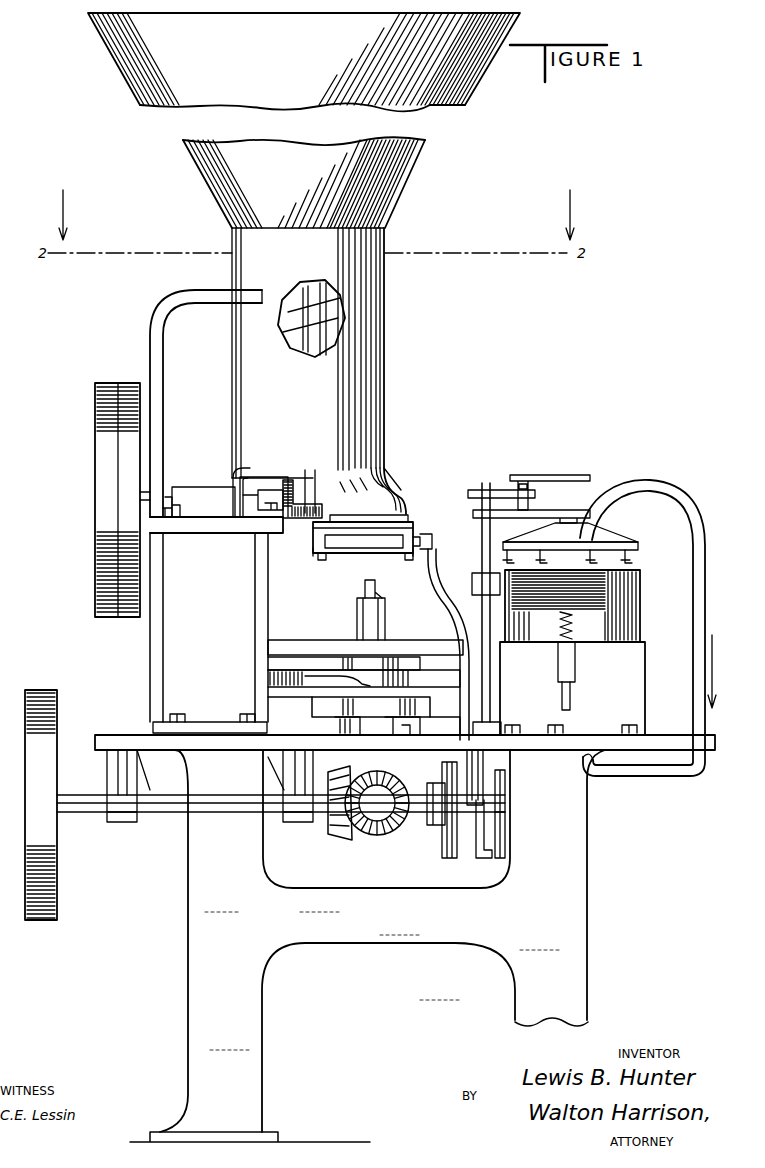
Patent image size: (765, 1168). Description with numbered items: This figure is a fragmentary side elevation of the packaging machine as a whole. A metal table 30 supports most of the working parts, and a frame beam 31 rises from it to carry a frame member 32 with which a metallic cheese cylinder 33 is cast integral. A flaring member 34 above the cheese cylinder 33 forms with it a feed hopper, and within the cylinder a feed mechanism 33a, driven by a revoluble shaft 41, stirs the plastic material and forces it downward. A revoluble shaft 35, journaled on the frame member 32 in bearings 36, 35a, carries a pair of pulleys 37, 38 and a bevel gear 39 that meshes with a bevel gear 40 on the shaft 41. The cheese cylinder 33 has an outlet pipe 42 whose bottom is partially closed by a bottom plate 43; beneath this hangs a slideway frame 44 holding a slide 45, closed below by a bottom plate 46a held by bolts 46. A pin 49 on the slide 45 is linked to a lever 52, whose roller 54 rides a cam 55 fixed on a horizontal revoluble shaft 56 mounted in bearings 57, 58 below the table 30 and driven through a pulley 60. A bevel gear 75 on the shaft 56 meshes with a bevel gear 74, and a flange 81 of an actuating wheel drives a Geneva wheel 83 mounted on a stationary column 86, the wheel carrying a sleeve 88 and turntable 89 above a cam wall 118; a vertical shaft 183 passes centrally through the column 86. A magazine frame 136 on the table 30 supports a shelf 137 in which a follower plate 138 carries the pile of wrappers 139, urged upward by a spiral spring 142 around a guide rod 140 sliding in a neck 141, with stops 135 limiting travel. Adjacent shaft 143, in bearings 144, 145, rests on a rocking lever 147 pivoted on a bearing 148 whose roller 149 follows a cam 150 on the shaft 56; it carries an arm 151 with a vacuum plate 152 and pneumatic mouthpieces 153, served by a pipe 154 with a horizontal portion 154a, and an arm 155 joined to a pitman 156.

The table 30 is at (715, 743).
The frame beam 31 is at (160, 660).
The frame member 32 is at (182, 306).
The cheese cylinder 33 is at (375, 345).
The feed mechanism 33a is at (330, 310).
The flaring member 34 is at (118, 60).
The revoluble shaft 35 is at (170, 494).
The bearing 35a is at (192, 494).
The bearing 36 is at (255, 475).
The pulley 37 is at (128, 388).
The pulley 38 is at (103, 386).
The bevel gear 39 is at (288, 478).
The bevel gear 40 is at (300, 520).
The revoluble shaft 41 is at (310, 470).
The outlet pipe 42 is at (398, 496).
The bottom plate 43 is at (400, 512).
The slideway frame 44 is at (313, 540).
The slide 45 is at (380, 548).
The bolt 46 is at (404, 578).
The bottom plate 46a is at (330, 578).
The pin 49 is at (432, 542).
The lever 52 is at (445, 572).
The roller 54 is at (445, 815).
The cam 55 is at (450, 858).
The revoluble shaft 56 is at (415, 797).
The bearing 57 is at (120, 822).
The bearing 58 is at (298, 822).
The pulley 60 is at (52, 690).
The bevel gear 74 is at (390, 832).
The bevel gear 75 is at (340, 840).
The flange 81 is at (405, 735).
The Geneva wheel 83 is at (312, 705).
The stationary column 86 is at (385, 615).
The sleeve 88 is at (408, 664).
The turntable 89 is at (298, 640).
The cam wall 118 is at (314, 660).
The stop 135 is at (600, 580).
The magazine frame 136 is at (672, 600).
The shelf 137 is at (590, 642).
The follower plate 138 is at (528, 614).
The wrappers 139 is at (600, 568).
The guide rod 140 is at (570, 695).
The neck 141 is at (575, 670).
The spiral spring 142 is at (572, 625).
The shaft 143 is at (482, 608).
The bearing 144 is at (472, 581).
The bearing 145 is at (500, 713).
The rocking lever 147 is at (484, 856).
The bearing 148 is at (483, 762).
The roller 149 is at (505, 845).
The cam 150 is at (505, 818).
The arm 151 is at (560, 510).
The vacuum plate 152 is at (600, 535).
The pneumatic mouthpieces 153 is at (575, 557).
The pipe 154 is at (706, 503).
The pipe portion 154a is at (705, 768).
The arm 155 is at (498, 490).
The pitman 156 is at (555, 478).
The vertical shaft 183 is at (363, 588).